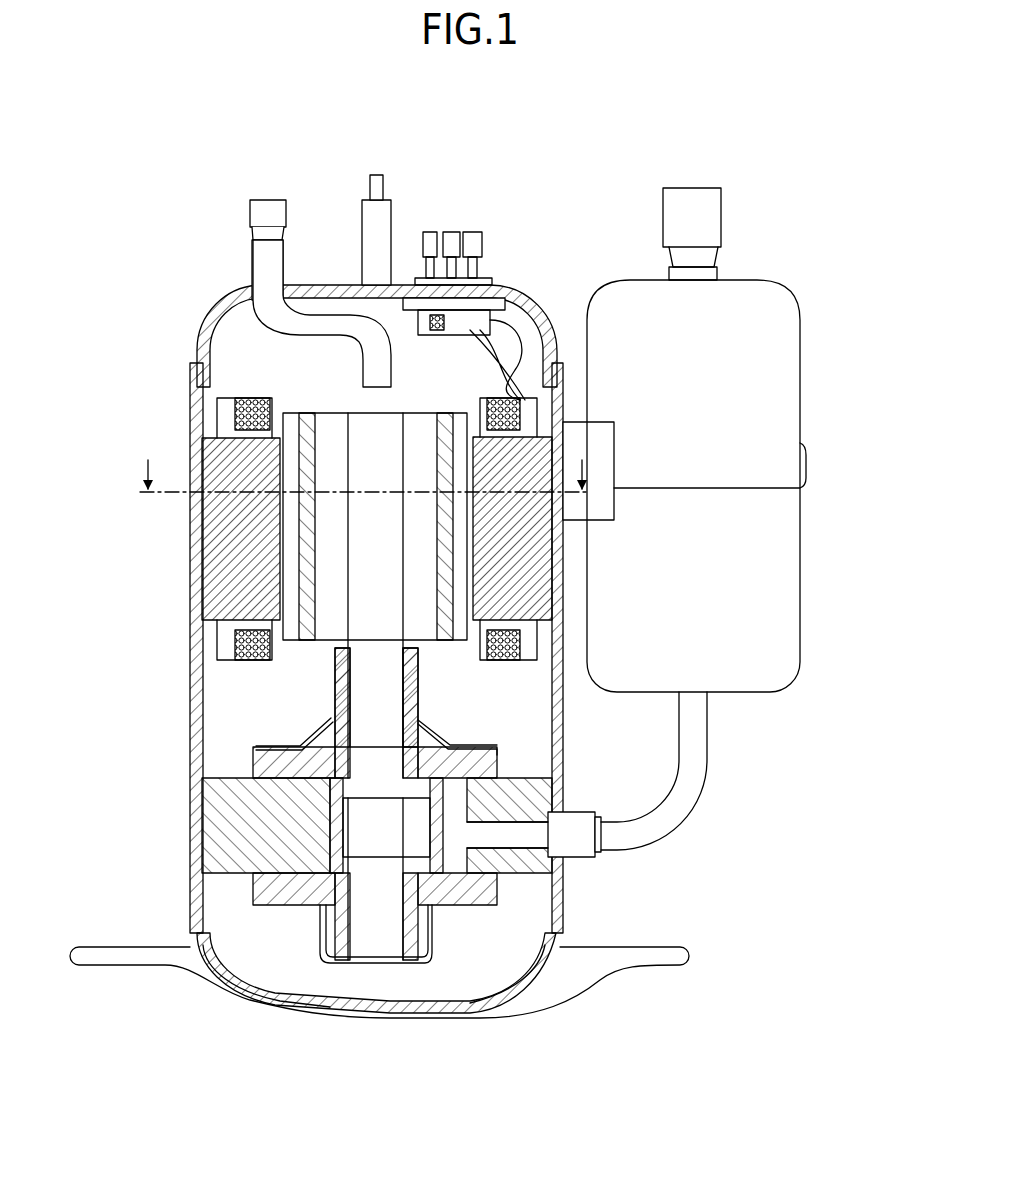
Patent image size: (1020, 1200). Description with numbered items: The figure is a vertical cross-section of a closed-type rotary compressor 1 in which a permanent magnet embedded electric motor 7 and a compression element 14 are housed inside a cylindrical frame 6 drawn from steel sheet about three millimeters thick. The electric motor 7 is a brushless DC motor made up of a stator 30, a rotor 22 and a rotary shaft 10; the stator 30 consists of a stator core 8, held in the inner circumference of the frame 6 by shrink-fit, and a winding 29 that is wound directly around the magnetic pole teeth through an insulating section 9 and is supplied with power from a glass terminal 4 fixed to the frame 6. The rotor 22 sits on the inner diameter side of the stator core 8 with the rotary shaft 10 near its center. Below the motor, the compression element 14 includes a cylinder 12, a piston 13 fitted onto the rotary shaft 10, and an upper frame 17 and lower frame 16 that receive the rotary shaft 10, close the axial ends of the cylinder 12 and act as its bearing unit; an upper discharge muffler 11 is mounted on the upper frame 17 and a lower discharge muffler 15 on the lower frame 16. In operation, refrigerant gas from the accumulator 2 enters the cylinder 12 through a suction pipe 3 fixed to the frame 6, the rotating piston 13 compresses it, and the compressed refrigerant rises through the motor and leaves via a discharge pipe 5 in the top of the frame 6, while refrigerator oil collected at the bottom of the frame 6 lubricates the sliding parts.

The rotary compressor 1 is at (438, 566).
The accumulator 2 is at (800, 413).
The suction pipe 3 is at (690, 818).
The glass terminal 4 is at (460, 232).
The discharge pipe 5 is at (252, 258).
The frame 6 is at (205, 315).
The permanent magnet embedded electric motor 7 is at (481, 679).
The stator core 8 is at (520, 597).
The insulating section 9 is at (527, 403).
The rotary shaft 10 is at (388, 540).
The upper discharge muffler 11 is at (313, 738).
The cylinder 12 is at (223, 776).
The piston 13 is at (337, 832).
The compression element 14 is at (367, 864).
The lower discharge muffler 15 is at (318, 930).
The lower frame 16 is at (455, 895).
The upper frame 17 is at (500, 762).
The rotor 22 is at (422, 568).
The winding 29 is at (500, 647).
The stator 30 is at (458, 529).